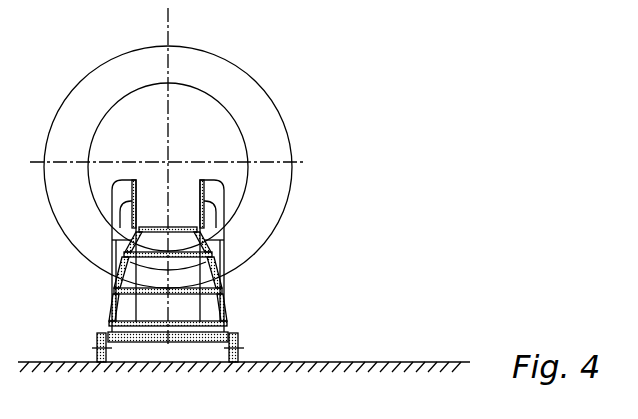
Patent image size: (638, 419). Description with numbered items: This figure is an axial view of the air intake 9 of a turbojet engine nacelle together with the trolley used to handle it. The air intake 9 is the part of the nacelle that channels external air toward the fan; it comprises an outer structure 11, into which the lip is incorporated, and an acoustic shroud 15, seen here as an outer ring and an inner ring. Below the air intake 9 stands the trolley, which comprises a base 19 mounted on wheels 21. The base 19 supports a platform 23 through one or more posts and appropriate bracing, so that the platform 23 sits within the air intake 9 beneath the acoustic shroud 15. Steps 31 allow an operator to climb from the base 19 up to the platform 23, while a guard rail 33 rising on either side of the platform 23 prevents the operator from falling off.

The air intake 9 is at (300, 47).
The outer structure 11 is at (272, 95).
The acoustic shroud 15 is at (212, 97).
The platform 23 is at (182, 227).
The guard rail 33 is at (225, 243).
The steps 31 is at (211, 299).
The wheels 21 is at (97, 340).
The base 19 is at (155, 343).